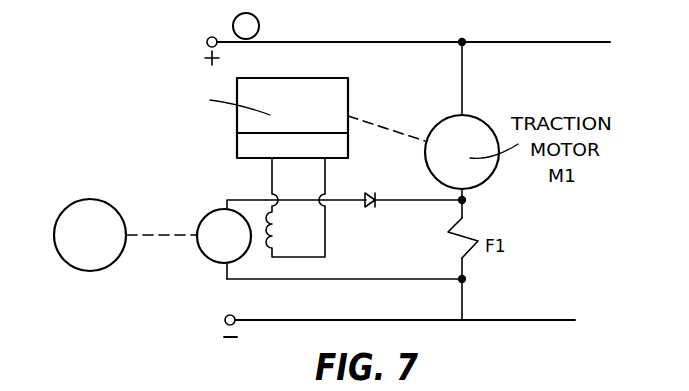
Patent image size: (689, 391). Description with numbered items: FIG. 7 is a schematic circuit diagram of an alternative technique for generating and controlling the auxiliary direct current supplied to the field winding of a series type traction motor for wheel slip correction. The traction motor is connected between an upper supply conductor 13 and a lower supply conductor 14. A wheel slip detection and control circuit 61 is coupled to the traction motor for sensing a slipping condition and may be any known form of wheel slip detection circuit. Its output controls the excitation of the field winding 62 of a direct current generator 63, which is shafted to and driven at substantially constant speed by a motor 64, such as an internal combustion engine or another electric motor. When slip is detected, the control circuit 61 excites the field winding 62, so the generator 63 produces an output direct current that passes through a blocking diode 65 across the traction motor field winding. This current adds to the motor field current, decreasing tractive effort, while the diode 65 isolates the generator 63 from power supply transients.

The positive supply line 13 is at (428, 42).
The negative supply line 14 is at (430, 320).
The wheel slip detection and control circuit 61 is at (308, 90).
The field winding 62 is at (275, 232).
The direct current generator 63 is at (207, 216).
The motor 64 is at (99, 271).
The blocking diode 65 is at (370, 192).